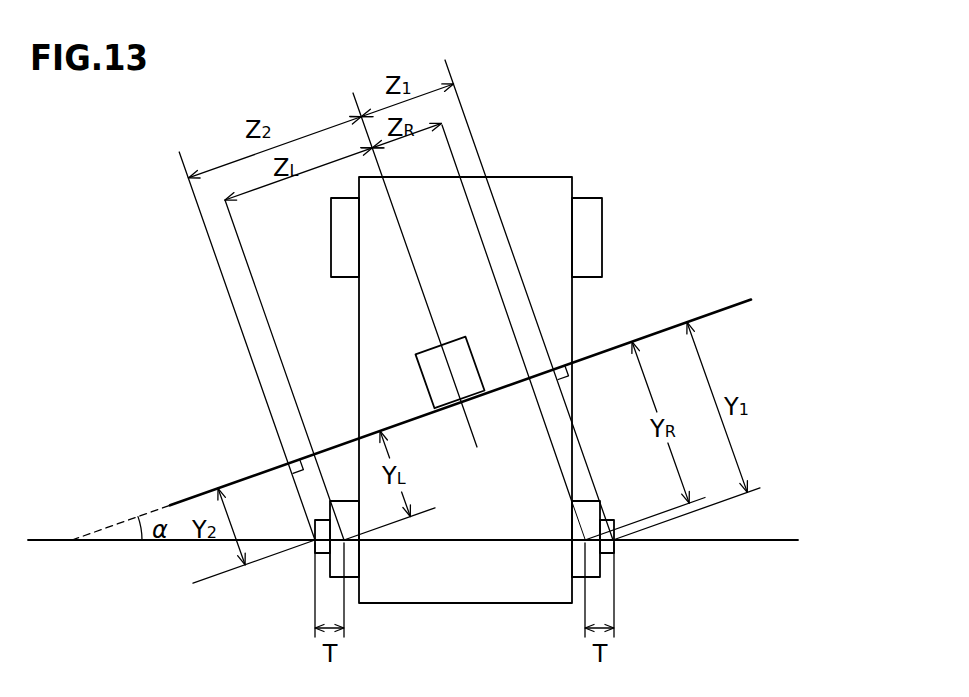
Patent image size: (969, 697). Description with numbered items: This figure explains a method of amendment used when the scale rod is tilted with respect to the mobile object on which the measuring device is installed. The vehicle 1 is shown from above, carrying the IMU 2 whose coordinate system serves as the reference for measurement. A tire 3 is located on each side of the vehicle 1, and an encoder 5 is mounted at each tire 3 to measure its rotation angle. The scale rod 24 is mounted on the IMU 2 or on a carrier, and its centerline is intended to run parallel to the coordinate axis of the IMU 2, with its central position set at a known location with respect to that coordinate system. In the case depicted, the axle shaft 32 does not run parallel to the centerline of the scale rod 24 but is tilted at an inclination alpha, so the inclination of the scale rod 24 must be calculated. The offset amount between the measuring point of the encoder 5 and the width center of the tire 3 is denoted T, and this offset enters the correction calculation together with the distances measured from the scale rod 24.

The vehicle 1 is at (540, 177).
The IMU 2 is at (417, 367).
The tire 3 is at (330, 568).
The encoder 5 is at (315, 548).
The scale rod 24 is at (732, 305).
The axle shaft 32 is at (712, 540).